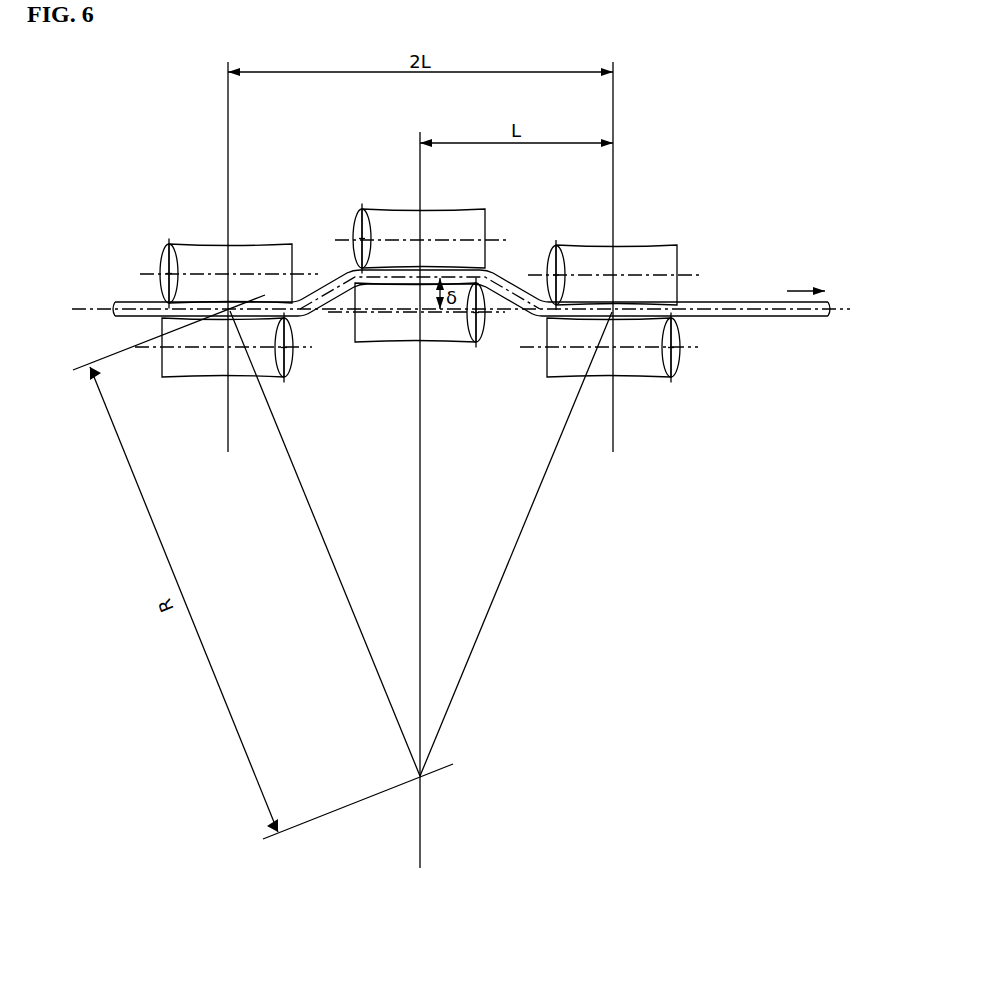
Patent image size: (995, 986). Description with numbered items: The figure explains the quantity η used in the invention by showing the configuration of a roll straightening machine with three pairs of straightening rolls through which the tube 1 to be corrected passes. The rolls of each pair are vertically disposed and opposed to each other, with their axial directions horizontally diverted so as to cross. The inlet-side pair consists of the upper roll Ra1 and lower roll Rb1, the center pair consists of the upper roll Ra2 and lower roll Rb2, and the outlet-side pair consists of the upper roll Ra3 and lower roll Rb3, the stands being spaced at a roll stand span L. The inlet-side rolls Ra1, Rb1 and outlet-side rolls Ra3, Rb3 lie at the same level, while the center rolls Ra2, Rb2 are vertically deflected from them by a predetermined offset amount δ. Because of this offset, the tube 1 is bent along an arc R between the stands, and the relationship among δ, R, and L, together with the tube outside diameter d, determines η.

The inlet-side upper straightening roll Ra1 is at (197, 257).
The inlet-side lower straightening roll Rb1 is at (198, 362).
The center upper straightening roll Ra2 is at (389, 222).
The center lower straightening roll Rb2 is at (390, 328).
The outlet-side upper straightening roll Ra3 is at (641, 258).
The outlet-side lower straightening roll Rb3 is at (642, 365).
The tube 1 is at (742, 311).